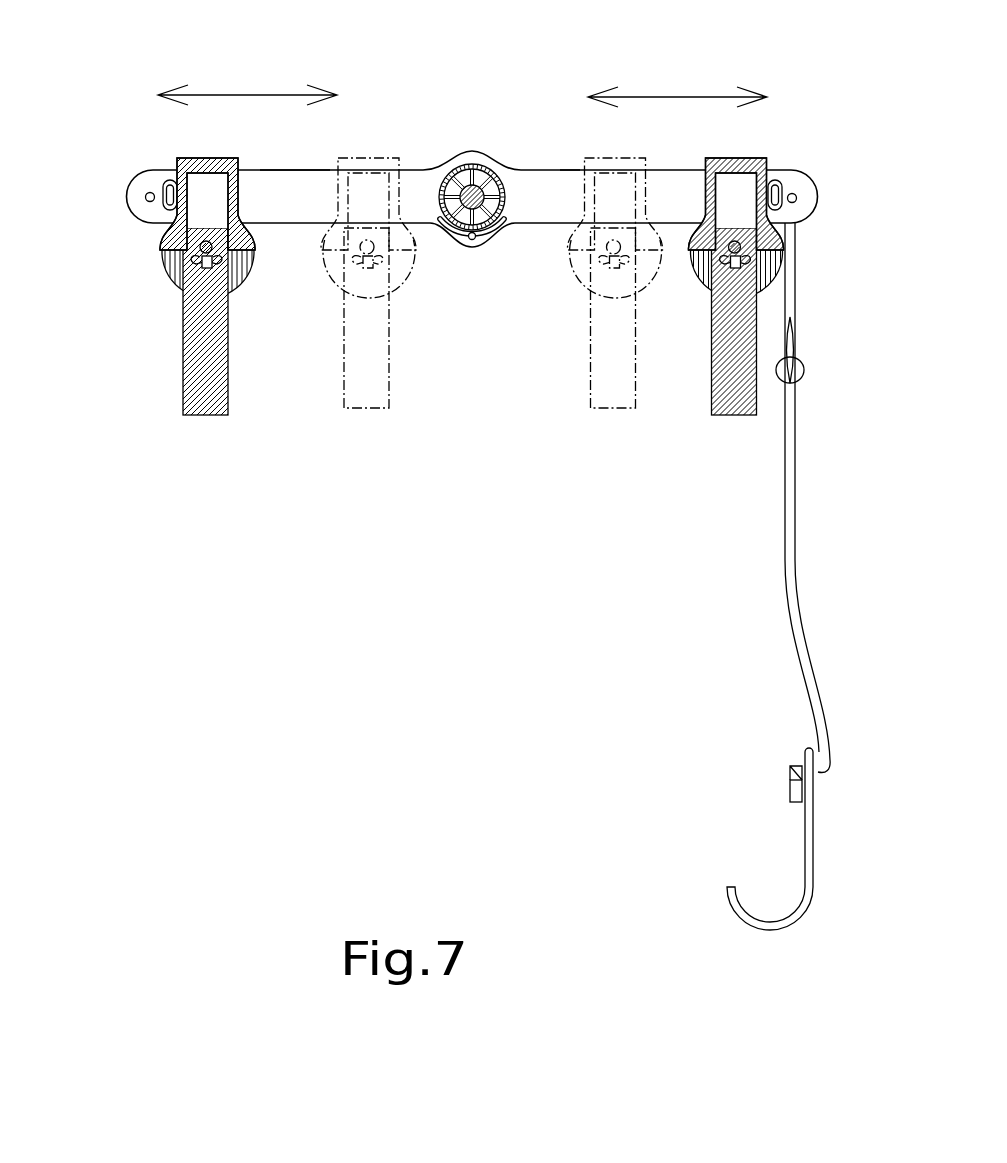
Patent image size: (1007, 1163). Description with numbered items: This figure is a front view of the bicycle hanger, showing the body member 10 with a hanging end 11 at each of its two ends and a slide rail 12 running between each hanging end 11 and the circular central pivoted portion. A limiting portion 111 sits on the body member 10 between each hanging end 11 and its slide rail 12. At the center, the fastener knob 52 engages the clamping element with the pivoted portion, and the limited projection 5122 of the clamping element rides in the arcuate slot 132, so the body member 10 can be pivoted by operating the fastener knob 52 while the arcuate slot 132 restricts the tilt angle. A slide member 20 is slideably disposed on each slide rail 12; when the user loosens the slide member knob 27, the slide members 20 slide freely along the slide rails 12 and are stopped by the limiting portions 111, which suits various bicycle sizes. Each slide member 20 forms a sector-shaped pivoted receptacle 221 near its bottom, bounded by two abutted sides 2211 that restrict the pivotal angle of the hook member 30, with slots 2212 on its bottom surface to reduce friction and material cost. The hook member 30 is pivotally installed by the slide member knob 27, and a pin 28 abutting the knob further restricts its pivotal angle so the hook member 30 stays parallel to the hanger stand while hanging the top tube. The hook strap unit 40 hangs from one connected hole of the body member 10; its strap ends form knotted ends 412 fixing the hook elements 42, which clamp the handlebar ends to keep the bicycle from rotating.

The body member 10 is at (535, 146).
The hanging end 11 is at (143, 207).
The limiting portion 111 is at (158, 186).
The slide rail 12 is at (280, 205).
The slide member 20 is at (158, 134).
The pivoted receptacle 221 is at (772, 268).
The abutted side 2211 is at (778, 271).
The slot 2212 is at (708, 272).
The slide member knob 27 is at (200, 255).
The pin 28 is at (207, 268).
The hook member 30 is at (205, 450).
The hook strap unit 40 is at (752, 667).
The knotted end 412 is at (790, 773).
The hook element 42 is at (730, 905).
The fastener knob 52 is at (463, 167).
The limited projection 5122 is at (472, 240).
The arcuate slot 132 is at (493, 228).